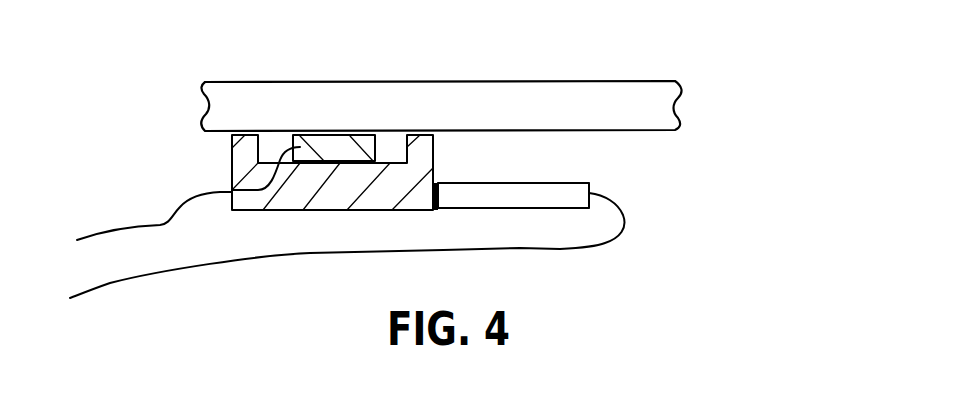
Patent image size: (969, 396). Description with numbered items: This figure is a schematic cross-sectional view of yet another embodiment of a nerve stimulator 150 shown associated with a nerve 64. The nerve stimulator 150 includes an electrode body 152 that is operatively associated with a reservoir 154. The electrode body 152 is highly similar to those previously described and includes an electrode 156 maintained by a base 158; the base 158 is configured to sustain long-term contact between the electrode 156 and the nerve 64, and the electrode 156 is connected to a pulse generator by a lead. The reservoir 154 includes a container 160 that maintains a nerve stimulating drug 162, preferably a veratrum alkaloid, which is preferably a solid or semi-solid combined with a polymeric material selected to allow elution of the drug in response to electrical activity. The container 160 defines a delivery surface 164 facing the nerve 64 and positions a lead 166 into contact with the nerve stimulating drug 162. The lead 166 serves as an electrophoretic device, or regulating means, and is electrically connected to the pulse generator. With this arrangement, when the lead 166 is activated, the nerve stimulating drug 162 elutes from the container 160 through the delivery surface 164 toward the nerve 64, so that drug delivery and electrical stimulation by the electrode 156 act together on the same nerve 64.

The nerve 64 is at (662, 92).
The nerve stimulator 150 is at (180, 171).
The electrode body 152 is at (267, 213).
The reservoir 154 is at (584, 180).
The electrode 156 is at (345, 145).
The base 158 is at (380, 198).
The container 160 is at (517, 208).
The nerve stimulating drug 162 is at (457, 198).
The delivery surface 164 is at (471, 183).
The lead 166 is at (622, 233).